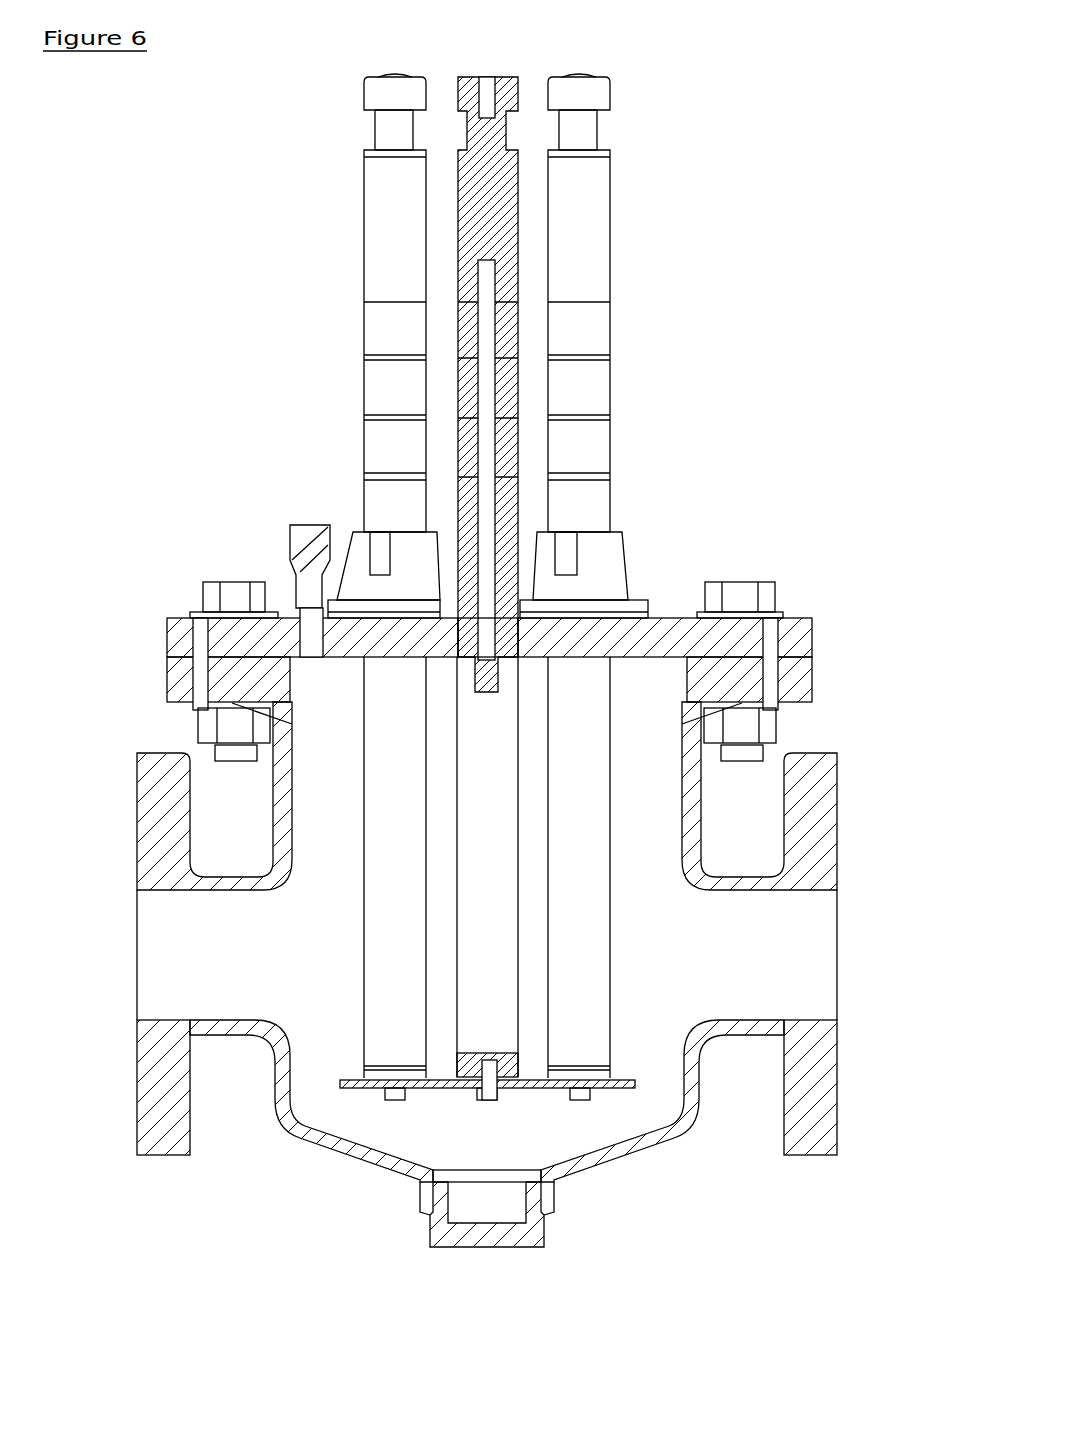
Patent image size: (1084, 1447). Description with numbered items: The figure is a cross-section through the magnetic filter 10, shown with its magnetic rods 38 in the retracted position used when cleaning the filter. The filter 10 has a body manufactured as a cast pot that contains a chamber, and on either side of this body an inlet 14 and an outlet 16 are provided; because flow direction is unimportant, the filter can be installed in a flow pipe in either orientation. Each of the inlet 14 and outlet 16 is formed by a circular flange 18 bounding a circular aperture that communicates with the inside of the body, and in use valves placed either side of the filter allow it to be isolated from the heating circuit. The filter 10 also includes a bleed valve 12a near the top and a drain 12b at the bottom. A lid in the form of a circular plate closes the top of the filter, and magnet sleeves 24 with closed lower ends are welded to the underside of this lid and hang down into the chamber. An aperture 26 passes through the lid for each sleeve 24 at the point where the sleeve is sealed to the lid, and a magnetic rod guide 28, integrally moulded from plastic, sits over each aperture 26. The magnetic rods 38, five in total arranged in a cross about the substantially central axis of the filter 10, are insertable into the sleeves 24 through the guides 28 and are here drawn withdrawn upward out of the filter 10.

The magnetic filter 10 is at (150, 206).
The bleed valve 12a is at (307, 640).
The drain 12b is at (473, 1200).
The inlet 14 is at (517, 940).
The outlet 16 is at (172, 960).
The circular flange 18 is at (173, 773).
The magnet sleeve 24 is at (397, 1038).
The aperture 26 is at (522, 637).
The magnetic rod guide 28 is at (356, 538).
The magnetic rod 38 is at (517, 200).